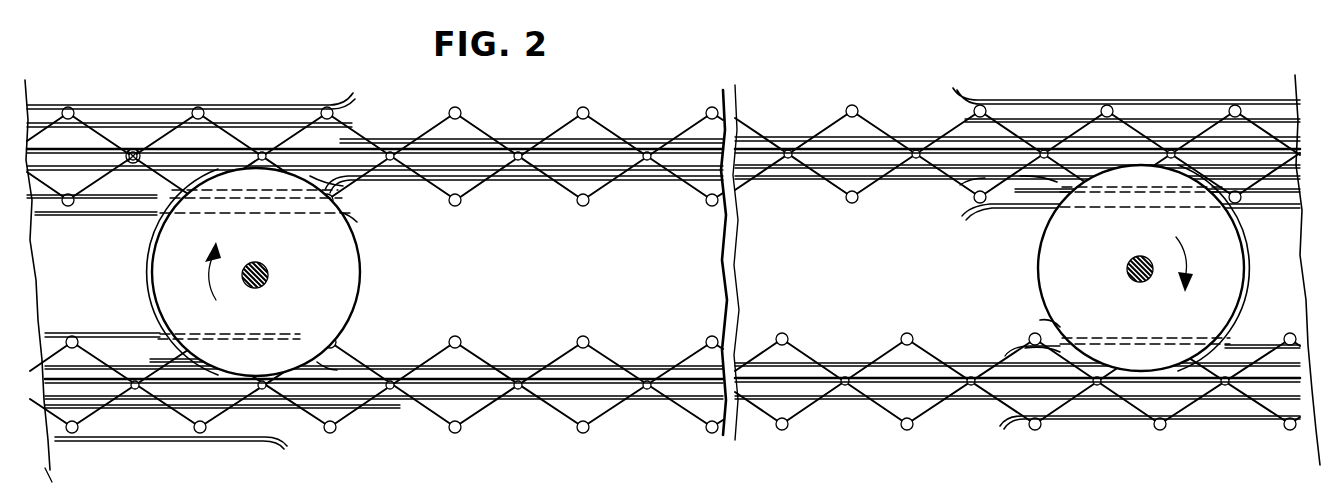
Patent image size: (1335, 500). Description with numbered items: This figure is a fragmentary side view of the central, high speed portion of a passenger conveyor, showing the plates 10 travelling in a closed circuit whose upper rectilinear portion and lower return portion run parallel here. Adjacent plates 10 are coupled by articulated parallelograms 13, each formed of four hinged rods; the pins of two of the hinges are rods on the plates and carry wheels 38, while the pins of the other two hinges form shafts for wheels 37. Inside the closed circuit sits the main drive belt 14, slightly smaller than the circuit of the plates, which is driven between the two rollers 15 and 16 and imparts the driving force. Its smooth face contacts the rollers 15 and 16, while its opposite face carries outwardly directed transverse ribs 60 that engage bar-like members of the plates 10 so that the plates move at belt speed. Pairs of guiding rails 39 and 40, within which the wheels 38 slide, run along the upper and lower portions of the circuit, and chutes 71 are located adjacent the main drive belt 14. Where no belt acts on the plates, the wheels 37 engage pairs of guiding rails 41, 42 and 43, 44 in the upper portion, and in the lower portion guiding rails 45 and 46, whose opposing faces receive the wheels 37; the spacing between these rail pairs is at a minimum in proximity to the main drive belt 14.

The plates 10 is at (652, 137).
The articulated parallelograms 13 is at (92, 114).
The main drive belt 14 is at (146, 269).
The roller 15 is at (341, 255).
The roller 16 is at (1050, 268).
The wheels 37 is at (198, 106).
The wheels 38 is at (133, 165).
The guiding rail 39 is at (422, 145).
The guiding rail 40 is at (175, 371).
The guiding rail 41 is at (124, 104).
The guiding rail 42 is at (300, 122).
The guiding rail 43 is at (42, 200).
The guiding rail 44 is at (98, 215).
The guiding rail 45 is at (92, 335).
The guiding rail 46 is at (222, 441).
The ribs 60 is at (150, 318).
The chutes 71 is at (641, 180).